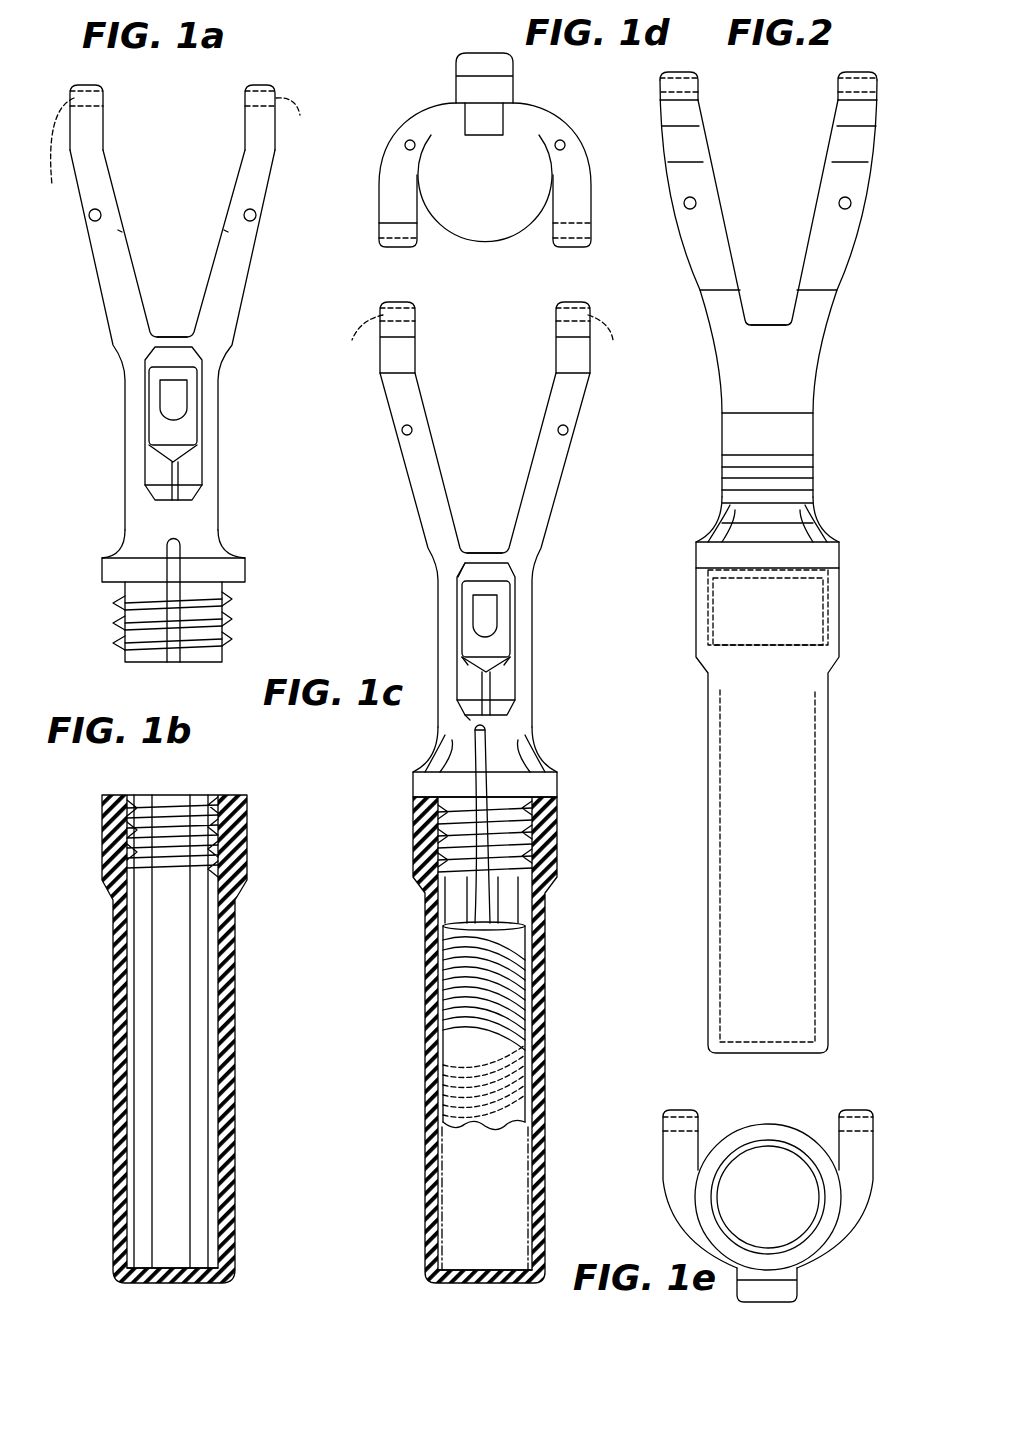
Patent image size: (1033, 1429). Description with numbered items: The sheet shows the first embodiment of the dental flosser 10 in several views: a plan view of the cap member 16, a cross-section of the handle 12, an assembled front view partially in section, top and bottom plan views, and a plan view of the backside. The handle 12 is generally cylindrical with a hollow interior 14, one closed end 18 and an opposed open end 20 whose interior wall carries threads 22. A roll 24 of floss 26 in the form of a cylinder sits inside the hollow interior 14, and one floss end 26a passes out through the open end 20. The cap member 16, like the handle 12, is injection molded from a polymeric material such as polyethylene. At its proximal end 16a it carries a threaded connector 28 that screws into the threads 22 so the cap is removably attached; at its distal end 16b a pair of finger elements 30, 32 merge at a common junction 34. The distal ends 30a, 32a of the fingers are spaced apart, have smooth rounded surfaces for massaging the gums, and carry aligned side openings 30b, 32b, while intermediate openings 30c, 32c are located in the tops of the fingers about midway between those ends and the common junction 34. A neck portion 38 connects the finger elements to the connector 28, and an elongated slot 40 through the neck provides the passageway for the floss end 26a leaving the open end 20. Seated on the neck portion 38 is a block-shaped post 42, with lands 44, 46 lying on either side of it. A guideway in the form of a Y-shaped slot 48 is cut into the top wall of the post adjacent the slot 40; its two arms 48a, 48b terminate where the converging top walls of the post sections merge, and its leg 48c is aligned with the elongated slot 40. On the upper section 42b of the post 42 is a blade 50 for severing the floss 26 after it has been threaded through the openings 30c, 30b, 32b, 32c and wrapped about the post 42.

In FIG. 1c, the dental flosser 10 is at (496, 780).
In FIG. 2, the dental flosser 10 is at (751, 560).
In FIG. 1c, the handle 12 is at (507, 1032).
In FIG. 1b, the handle 12 is at (176, 1018).
In FIG. 2, the handle 12 is at (792, 797).
In FIG. 1c, the hollow interior 14 is at (442, 1192).
In FIG. 1b, the hollow interior 14 is at (143, 962).
In FIG. 1a, the cap member 16 is at (182, 357).
In FIG. 1c, the cap member 16 is at (496, 537).
In FIG. 2, the cap member 16 is at (748, 304).
In FIG. 1a, the proximal end 16a is at (102, 570).
In FIG. 1a, the distal end 16b is at (227, 232).
In FIG. 1c, the closed end 18 is at (468, 1283).
In FIG. 1b, the closed end 18 is at (200, 1285).
In FIG. 1e, the closed end 18 is at (750, 1205).
In FIG. 1c, the open end 20 is at (528, 800).
In FIG. 1b, the open end 20 is at (216, 802).
In FIG. 2, the open end 20 is at (822, 573).
In FIG. 1c, the threads 22 is at (455, 895).
In FIG. 1b, the threads 22 is at (122, 818).
In FIG. 1c, the roll of floss 24 is at (508, 985).
In FIG. 1c, the floss 26 is at (549, 820).
In FIG. 1c, the floss end 26a is at (490, 735).
In FIG. 1a, the threaded connector 28 is at (228, 600).
In FIG. 1c, the threaded connector 28 is at (560, 820).
In FIG. 2, the threaded connector 28 is at (830, 626).
In FIG. 1a, the finger element 30 is at (137, 303).
In FIG. 1d, the finger element 30 is at (485, 158).
In FIG. 1c, the finger element 30 is at (443, 497).
In FIG. 2, the finger element 30 is at (820, 282).
In FIG. 1e, the finger element 30 is at (705, 1187).
In FIG. 1a, the distal end of finger element 30a is at (86, 82).
In FIG. 1d, the distal end of finger element 30a is at (582, 248).
In FIG. 1c, the distal end of finger element 30a is at (405, 300).
In FIG. 2, the distal end of finger element 30a is at (870, 72).
In FIG. 1a, the opening 30b is at (52, 156).
In FIG. 1d, the opening 30b is at (552, 232).
In FIG. 1c, the opening 30b is at (357, 342).
In FIG. 1e, the opening 30b is at (698, 1121).
In FIG. 1a, the intermediate opening 30c is at (90, 218).
In FIG. 1d, the intermediate opening 30c is at (563, 140).
In FIG. 1c, the intermediate opening 30c is at (402, 432).
In FIG. 2, the intermediate opening 30c is at (840, 204).
In FIG. 1a, the finger element 32 is at (254, 291).
In FIG. 1d, the finger element 32 is at (429, 171).
In FIG. 1c, the finger element 32 is at (564, 497).
In FIG. 2, the finger element 32 is at (725, 282).
In FIG. 1e, the finger element 32 is at (837, 1167).
In FIG. 1a, the distal end of finger element 32a is at (262, 80).
In FIG. 1d, the distal end of finger element 32a is at (398, 248).
In FIG. 1c, the distal end of finger element 32a is at (565, 300).
In FIG. 2, the distal end of finger element 32a is at (690, 72).
In FIG. 1a, the opening 32b is at (305, 117).
In FIG. 1d, the opening 32b is at (418, 232).
In FIG. 1c, the opening 32b is at (615, 342).
In FIG. 1e, the opening 32b is at (839, 1121).
In FIG. 1a, the intermediate opening 32c is at (256, 215).
In FIG. 1d, the intermediate opening 32c is at (404, 140).
In FIG. 1c, the intermediate opening 32c is at (570, 435).
In FIG. 2, the intermediate opening 32c is at (697, 200).
In FIG. 1a, the common junction 34 is at (165, 337).
In FIG. 1c, the common junction 34 is at (484, 553).
In FIG. 2, the common junction 34 is at (762, 325).
In FIG. 1a, the neck portion 38 is at (212, 522).
In FIG. 1c, the neck portion 38 is at (530, 622).
In FIG. 2, the neck portion 38 is at (828, 385).
In FIG. 1a, the elongated slot 40 is at (170, 595).
In FIG. 1c, the elongated slot 40 is at (440, 772).
In FIG. 1a, the post 42 is at (149, 372).
In FIG. 1c, the post 42 is at (462, 585).
In FIG. 1c, the upper section of post 42b is at (465, 590).
In FIG. 1a, the land 44 is at (159, 382).
In FIG. 1c, the land 44 is at (488, 640).
In FIG. 1a, the land 46 is at (212, 415).
In FIG. 1c, the land 46 is at (530, 640).
In FIG. 1a, the Y-shaped slot 48 is at (160, 455).
In FIG. 1c, the Y-shaped slot 48 is at (490, 678).
In FIG. 1c, the arm of Y-shaped slot 48a is at (462, 662).
In FIG. 1c, the arm of Y-shaped slot 48b is at (512, 660).
In FIG. 1c, the leg of Y-shaped slot 48c is at (470, 710).
In FIG. 1a, the blade 50 is at (188, 380).
In FIG. 1c, the blade 50 is at (488, 612).